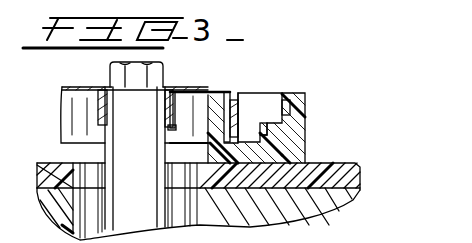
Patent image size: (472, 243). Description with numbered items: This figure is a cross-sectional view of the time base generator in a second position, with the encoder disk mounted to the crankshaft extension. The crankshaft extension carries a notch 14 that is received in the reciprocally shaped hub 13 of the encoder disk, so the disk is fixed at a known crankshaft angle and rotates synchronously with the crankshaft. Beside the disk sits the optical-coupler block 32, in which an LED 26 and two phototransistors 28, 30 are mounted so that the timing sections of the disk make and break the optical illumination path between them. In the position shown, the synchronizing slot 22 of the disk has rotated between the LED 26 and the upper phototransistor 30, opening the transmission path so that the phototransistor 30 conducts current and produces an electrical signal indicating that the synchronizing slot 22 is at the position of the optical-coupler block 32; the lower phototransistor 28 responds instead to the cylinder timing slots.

The hub 13 is at (101, 104).
The notch 14 is at (156, 100).
The slot 22 is at (205, 89).
The LED 26 is at (239, 100).
The phototransistor 28 is at (258, 126).
The phototransistor 30 is at (282, 98).
The optical-coupler block 32 is at (303, 143).